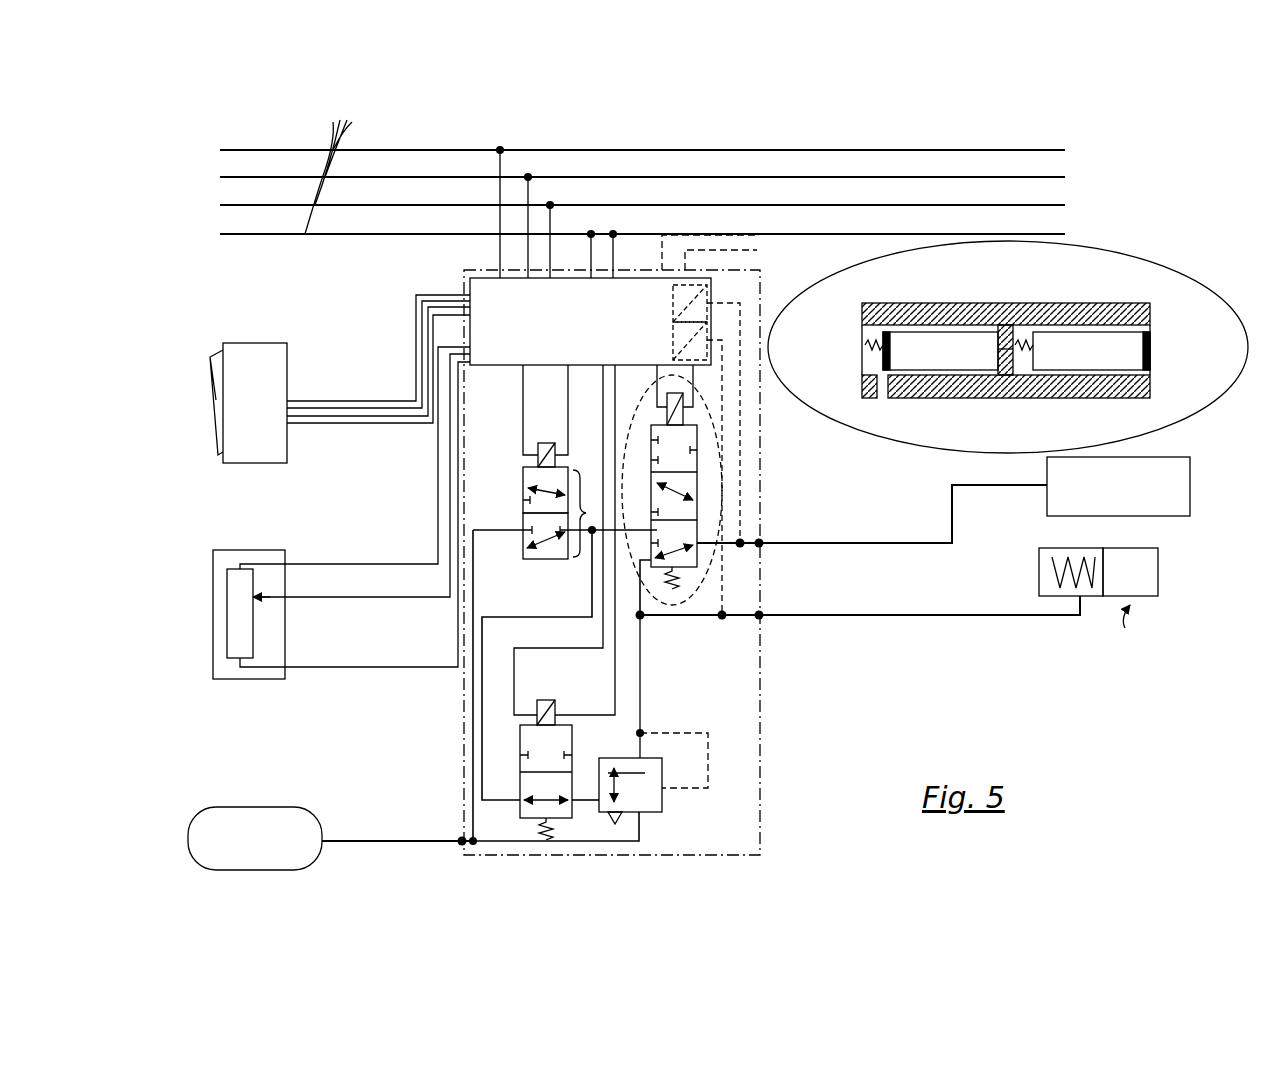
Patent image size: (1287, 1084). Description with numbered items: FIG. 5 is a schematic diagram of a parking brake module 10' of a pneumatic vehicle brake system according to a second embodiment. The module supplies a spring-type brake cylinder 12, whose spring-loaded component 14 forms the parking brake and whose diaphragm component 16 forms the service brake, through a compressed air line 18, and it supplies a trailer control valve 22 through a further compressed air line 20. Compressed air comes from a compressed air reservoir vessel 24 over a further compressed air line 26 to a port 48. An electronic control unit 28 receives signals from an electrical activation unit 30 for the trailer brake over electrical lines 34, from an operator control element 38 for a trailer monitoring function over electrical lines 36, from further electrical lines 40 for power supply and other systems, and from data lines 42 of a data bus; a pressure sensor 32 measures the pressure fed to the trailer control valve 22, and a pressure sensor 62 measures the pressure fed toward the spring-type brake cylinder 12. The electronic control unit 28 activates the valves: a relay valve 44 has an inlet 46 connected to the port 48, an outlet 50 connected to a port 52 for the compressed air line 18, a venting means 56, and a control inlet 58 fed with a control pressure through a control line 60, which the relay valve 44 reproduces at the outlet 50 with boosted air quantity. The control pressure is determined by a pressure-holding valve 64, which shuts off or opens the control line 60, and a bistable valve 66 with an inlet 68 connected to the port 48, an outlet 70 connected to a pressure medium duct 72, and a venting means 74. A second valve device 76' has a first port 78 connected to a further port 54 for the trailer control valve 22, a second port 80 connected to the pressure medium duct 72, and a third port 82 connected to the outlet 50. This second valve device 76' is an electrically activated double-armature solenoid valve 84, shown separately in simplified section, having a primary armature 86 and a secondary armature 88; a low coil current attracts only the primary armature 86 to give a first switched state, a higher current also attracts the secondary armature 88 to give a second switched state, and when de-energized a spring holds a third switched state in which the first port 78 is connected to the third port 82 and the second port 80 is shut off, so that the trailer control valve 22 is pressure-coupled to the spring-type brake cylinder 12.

The parking brake module 10' is at (635, 562).
The spring-type brake cylinder 12 is at (1119, 625).
The spring-loaded component 14 is at (1043, 548).
The diaphragm component 16 is at (1158, 568).
The compressed air line 18 is at (856, 617).
The further compressed air line 20 is at (872, 543).
The trailer control valve 22 is at (1118, 486).
The compressed air reservoir vessel 24 is at (296, 870).
The further compressed air line 26 is at (392, 843).
The electronic control unit 28 is at (590, 321).
The electrical activation unit 30 is at (213, 590).
The pressure sensor 32 is at (695, 290).
The electrical lines 34 is at (375, 667).
The electrical lines 36 is at (386, 416).
The operator control element 38 is at (228, 343).
The further electrical lines 40 is at (642, 166).
The data lines 42 is at (760, 240).
The relay valve 44 is at (662, 800).
The inlet 46 is at (640, 812).
The port 48 is at (463, 843).
The outlet 50 is at (642, 757).
The port 52 is at (761, 617).
The further port 54 is at (760, 546).
The venting means 56 is at (613, 825).
The control inlet 58 is at (598, 788).
The control line 60 is at (583, 805).
The pressure sensor 62 is at (712, 330).
The pressure-holding valve 64 is at (557, 724).
The bistable valve 66 is at (538, 458).
The inlet 68 is at (523, 528).
The outlet 70 is at (590, 513).
The pressure medium duct 72 is at (592, 606).
The venting means 74 is at (523, 548).
The second valve device 76' is at (652, 399).
The first port 78 is at (700, 547).
The second port 80 is at (651, 520).
The third port 82 is at (651, 563).
The double-armature solenoid valve 84 is at (1000, 301).
The primary armature 86 is at (920, 332).
The secondary armature 88 is at (1050, 332).